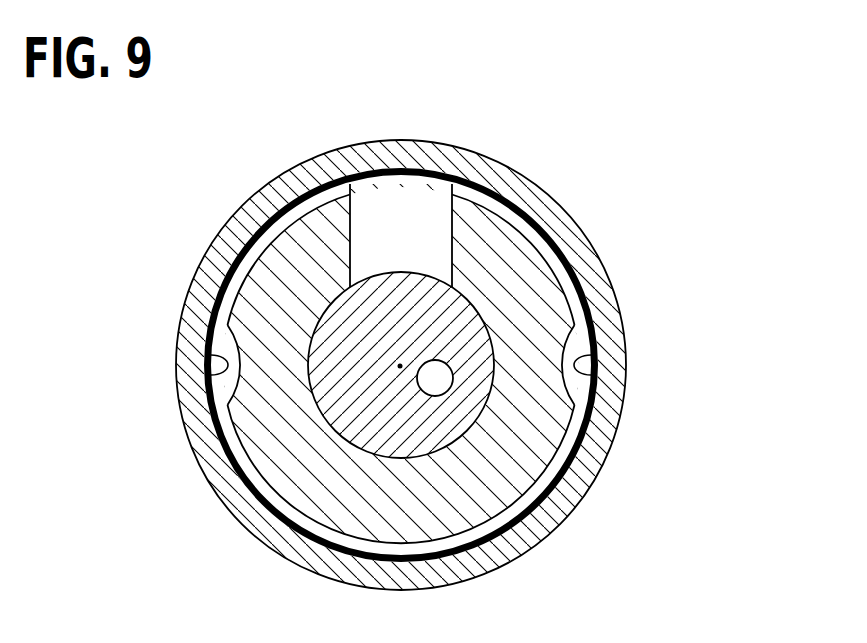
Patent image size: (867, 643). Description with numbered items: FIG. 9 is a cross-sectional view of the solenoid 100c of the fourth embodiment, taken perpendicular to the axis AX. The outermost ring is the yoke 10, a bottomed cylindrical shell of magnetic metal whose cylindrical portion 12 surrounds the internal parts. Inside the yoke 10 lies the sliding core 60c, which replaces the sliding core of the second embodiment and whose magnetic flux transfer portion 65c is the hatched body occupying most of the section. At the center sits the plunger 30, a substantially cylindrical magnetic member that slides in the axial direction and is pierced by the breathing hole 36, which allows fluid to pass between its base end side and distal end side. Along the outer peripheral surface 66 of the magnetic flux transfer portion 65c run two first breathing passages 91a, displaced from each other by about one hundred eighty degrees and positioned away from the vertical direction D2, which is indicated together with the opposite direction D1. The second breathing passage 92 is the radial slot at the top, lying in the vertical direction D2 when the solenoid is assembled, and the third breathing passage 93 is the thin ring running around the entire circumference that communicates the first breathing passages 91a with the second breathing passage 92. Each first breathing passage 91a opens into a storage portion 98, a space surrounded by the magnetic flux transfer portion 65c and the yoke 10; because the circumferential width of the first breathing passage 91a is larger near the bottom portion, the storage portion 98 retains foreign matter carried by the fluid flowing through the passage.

The outer peripheral surface 66 is at (450, 365).
The yoke 10 is at (450, 365).
The cylindrical portion 12 is at (608, 308).
The third breathing passage 93 is at (543, 233).
The first breathing passage 91a is at (223, 367).
The sliding core 60c is at (477, 363).
The magnetic flux transfer portion 65c is at (547, 277).
The storage portion 98 is at (572, 383).
The second breathing passage 92 is at (407, 237).
The plunger 30 is at (350, 318).
The breathing hole 36 is at (447, 383).
The axis AX is at (400, 366).
The solenoid 100c is at (717, 158).
The first direction D1 is at (778, 545).
The vertical direction D2 is at (778, 467).